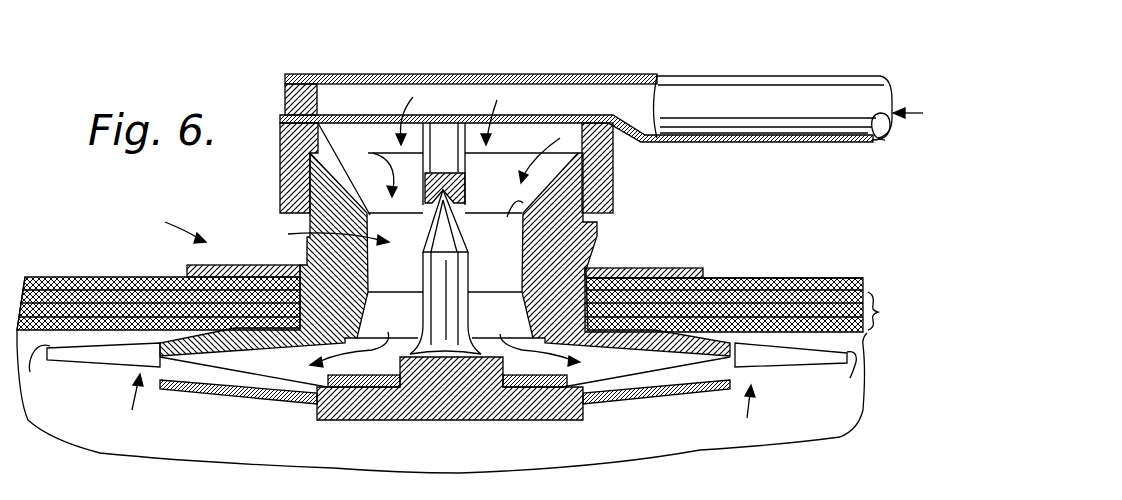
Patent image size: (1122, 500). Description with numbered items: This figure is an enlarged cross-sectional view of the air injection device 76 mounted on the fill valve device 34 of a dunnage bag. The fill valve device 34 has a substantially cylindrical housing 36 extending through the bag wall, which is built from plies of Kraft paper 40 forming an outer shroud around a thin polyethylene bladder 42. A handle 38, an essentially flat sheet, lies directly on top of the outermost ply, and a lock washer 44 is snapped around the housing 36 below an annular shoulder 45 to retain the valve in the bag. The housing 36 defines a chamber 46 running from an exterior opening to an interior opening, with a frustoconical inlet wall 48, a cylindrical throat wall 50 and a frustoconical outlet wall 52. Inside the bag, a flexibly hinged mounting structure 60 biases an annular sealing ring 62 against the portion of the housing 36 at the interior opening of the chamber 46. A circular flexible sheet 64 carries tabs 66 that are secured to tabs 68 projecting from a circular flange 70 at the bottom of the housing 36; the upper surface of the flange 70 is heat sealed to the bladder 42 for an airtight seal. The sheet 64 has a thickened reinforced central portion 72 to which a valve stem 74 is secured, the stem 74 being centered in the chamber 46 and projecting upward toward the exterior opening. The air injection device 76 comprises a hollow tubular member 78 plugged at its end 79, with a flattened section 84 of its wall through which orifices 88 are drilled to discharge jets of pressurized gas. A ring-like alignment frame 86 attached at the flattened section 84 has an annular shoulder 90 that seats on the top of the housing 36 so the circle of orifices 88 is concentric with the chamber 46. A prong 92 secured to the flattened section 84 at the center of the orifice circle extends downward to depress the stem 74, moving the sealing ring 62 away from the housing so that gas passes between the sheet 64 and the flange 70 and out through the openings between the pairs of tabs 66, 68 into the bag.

The fill valve device 34 is at (164, 218).
The housing 36 is at (604, 236).
The handle 38 is at (786, 278).
The plies of Kraft paper 40 is at (467, 304).
The bladder 42 is at (868, 352).
The lock washer 44 is at (690, 270).
The annular shoulder 45 is at (600, 270).
The chamber 46 is at (413, 222).
The inlet wall 48 is at (519, 195).
The throat wall 50 is at (368, 258).
The outlet wall 52 is at (526, 337).
The flexibly hinged mounting structure 60 is at (431, 410).
The annular sealing ring 62 is at (364, 337).
The circular flexible sheet 64 is at (248, 394).
The tabs 66 is at (82, 366).
The tabs 68 is at (441, 377).
The circular flange 70 is at (266, 340).
The reinforced central portion 72 is at (426, 417).
The valve stem 74 is at (452, 263).
The air injection device 76 is at (735, 57).
The tubular member 78 is at (507, 78).
The end 79 is at (288, 97).
The flattened section 84 is at (338, 118).
The alignment frame 86 is at (606, 168).
The orifices 88 is at (446, 116).
The annular shoulder 90 is at (374, 162).
The prong 92 is at (452, 162).